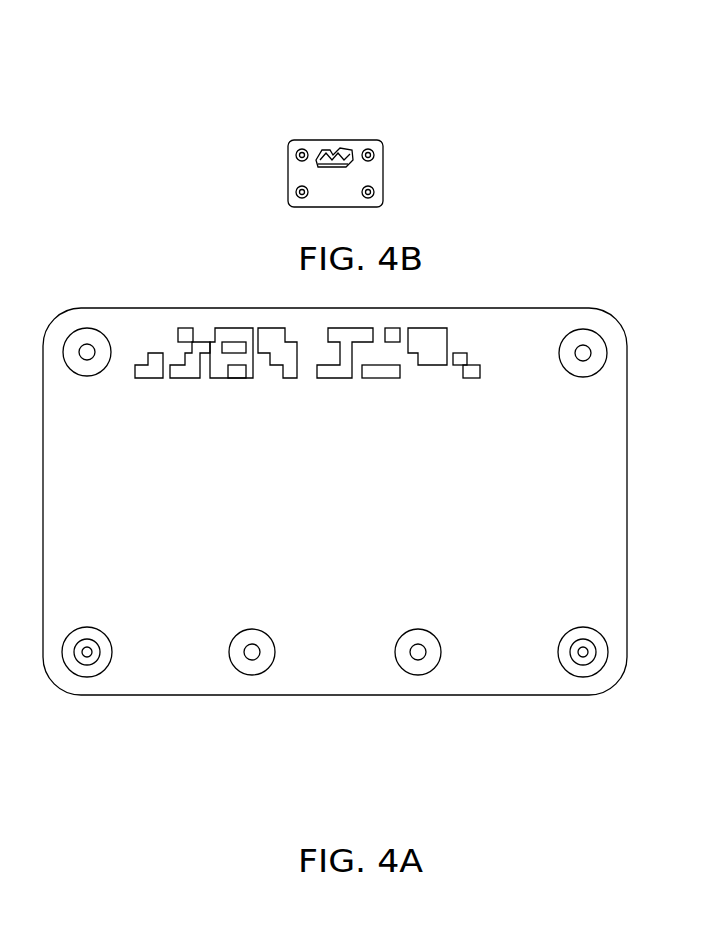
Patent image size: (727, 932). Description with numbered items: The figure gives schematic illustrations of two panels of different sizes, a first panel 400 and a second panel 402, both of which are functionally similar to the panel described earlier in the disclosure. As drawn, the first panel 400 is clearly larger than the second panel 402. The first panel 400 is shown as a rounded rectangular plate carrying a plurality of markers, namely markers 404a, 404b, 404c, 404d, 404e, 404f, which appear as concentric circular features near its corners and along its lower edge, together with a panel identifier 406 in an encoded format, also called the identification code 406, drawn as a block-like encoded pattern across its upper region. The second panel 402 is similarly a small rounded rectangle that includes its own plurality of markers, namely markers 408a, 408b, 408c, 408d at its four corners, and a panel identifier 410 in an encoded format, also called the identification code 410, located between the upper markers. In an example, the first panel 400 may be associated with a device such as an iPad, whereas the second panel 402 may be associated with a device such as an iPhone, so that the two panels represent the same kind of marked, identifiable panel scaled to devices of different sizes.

In FIG. 4A, the first panel 400 is at (500, 312).
In FIG. 4B, the second panel 402 is at (384, 163).
In FIG. 4A, the marker 404a is at (87, 352).
In FIG. 4A, the marker 404b is at (87, 656).
In FIG. 4A, the marker 404c is at (252, 652).
In FIG. 4A, the marker 404d is at (418, 652).
In FIG. 4A, the marker 404e is at (583, 652).
In FIG. 4A, the marker 404f is at (583, 353).
In FIG. 4A, the panel identifier 406 is at (347, 350).
In FIG. 4B, the marker 408a is at (298, 152).
In FIG. 4B, the marker 408b is at (298, 188).
In FIG. 4B, the marker 408c is at (375, 191).
In FIG. 4B, the marker 408d is at (369, 150).
In FIG. 4B, the panel identifier 410 is at (333, 147).